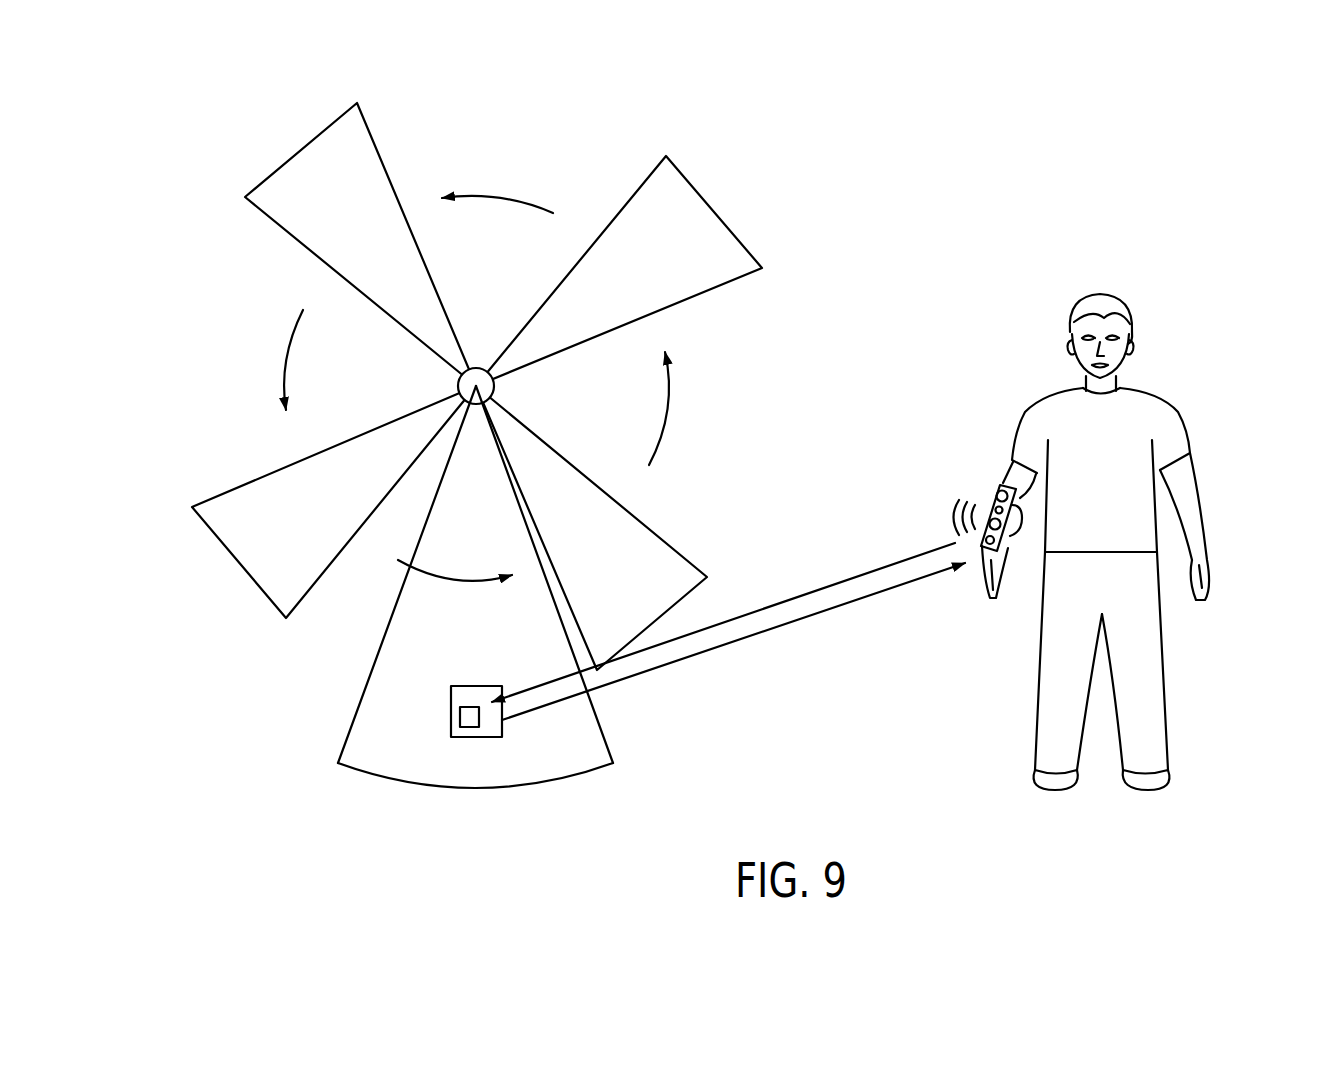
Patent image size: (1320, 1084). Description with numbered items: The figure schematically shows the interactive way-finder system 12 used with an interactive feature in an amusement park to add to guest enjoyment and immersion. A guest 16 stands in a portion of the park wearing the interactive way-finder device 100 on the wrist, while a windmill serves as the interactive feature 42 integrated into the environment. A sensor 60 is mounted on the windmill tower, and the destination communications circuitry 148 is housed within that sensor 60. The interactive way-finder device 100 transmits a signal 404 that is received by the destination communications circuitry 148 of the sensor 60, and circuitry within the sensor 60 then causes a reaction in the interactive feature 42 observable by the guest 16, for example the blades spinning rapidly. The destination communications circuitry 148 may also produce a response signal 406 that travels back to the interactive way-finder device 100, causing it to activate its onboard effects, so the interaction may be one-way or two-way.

The interactive way-finder system 12 is at (1032, 227).
The guest 16 is at (1177, 395).
The interactive feature 42 is at (298, 242).
The sensor 60 is at (490, 738).
The interactive way-finder device 100 is at (983, 495).
The destination communications circuitry 148 is at (471, 707).
The signal 404 is at (723, 620).
The response signal 406 is at (724, 648).